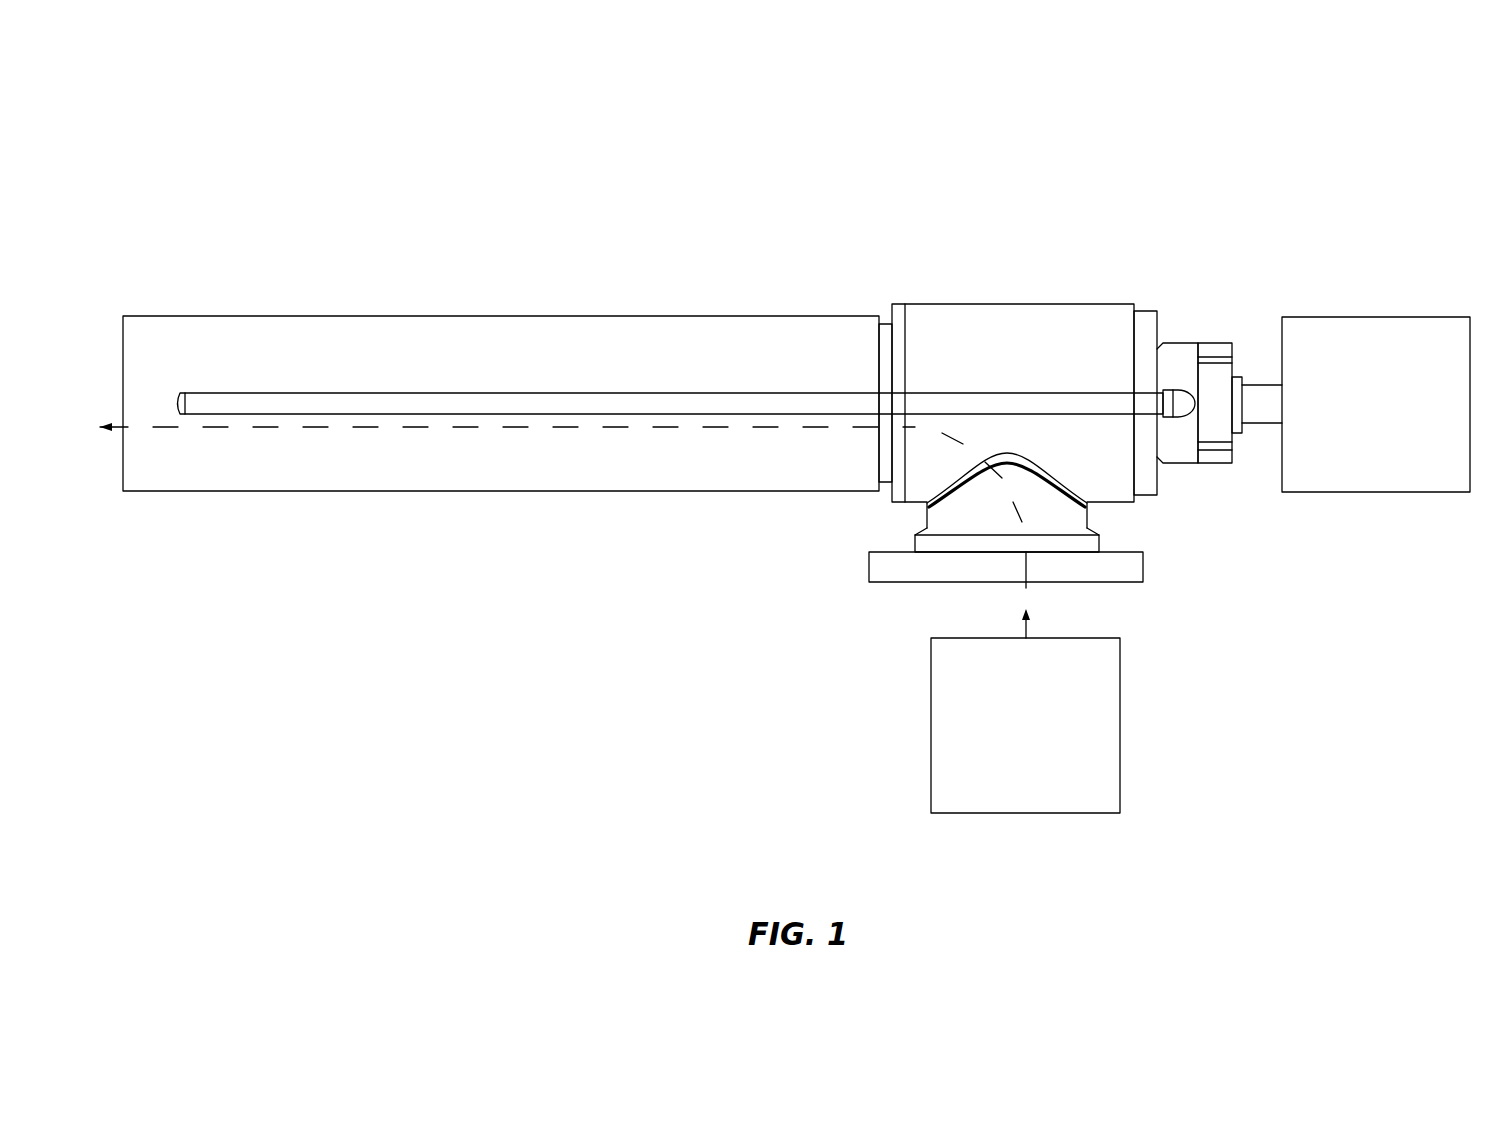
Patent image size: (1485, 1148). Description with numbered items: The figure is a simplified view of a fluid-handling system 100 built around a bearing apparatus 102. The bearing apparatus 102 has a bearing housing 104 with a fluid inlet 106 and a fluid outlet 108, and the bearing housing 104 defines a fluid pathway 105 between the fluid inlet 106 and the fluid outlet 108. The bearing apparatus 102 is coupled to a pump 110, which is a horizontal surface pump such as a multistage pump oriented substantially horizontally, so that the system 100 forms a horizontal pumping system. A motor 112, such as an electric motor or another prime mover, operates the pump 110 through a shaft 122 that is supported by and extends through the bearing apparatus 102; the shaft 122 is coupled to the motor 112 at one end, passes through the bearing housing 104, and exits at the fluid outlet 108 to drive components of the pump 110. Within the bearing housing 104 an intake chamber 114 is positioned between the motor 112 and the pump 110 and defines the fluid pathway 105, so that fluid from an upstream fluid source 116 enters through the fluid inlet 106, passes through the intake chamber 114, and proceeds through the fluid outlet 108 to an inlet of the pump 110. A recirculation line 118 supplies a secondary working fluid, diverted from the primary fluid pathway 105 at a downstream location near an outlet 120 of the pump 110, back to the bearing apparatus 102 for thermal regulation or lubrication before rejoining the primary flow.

The fluid-handling system 100 is at (1197, 132).
The bearing apparatus 102 is at (980, 349).
The bearing housing 104 is at (1108, 440).
The fluid pathway 105 is at (950, 447).
The fluid inlet 106 is at (1118, 582).
The fluid outlet 108 is at (878, 347).
The pump 110 is at (226, 368).
The motor 112 is at (1408, 416).
The intake chamber 114 is at (1085, 322).
The fluid source 116 is at (1058, 730).
The recirculation line 118 is at (540, 405).
The outlet of the pump 120 is at (147, 343).
The shaft 122 is at (1257, 398).